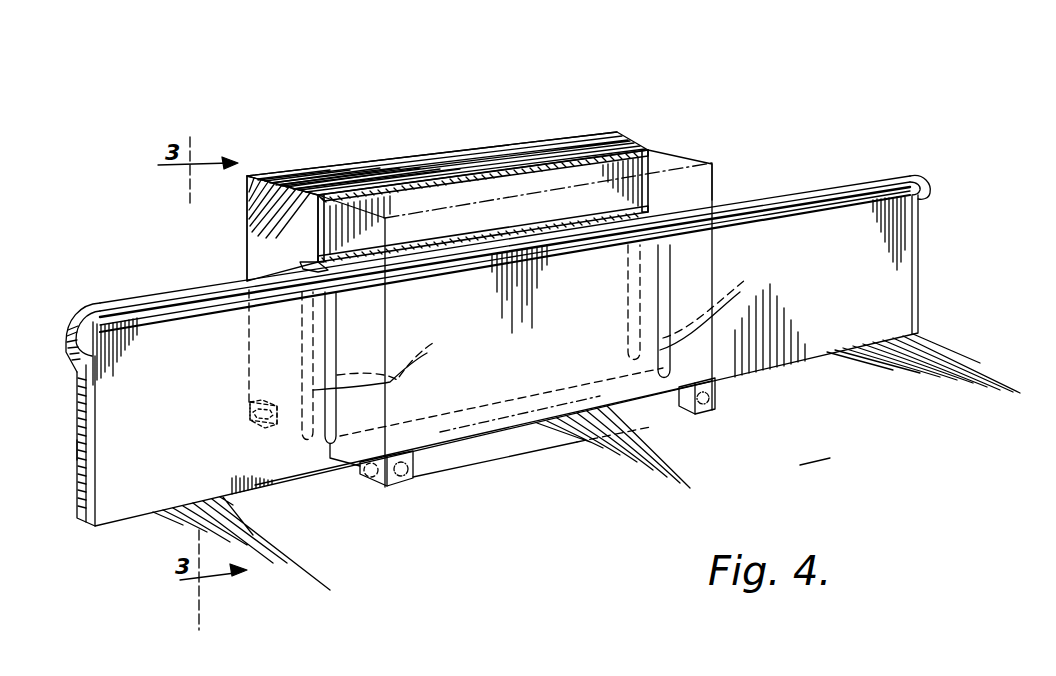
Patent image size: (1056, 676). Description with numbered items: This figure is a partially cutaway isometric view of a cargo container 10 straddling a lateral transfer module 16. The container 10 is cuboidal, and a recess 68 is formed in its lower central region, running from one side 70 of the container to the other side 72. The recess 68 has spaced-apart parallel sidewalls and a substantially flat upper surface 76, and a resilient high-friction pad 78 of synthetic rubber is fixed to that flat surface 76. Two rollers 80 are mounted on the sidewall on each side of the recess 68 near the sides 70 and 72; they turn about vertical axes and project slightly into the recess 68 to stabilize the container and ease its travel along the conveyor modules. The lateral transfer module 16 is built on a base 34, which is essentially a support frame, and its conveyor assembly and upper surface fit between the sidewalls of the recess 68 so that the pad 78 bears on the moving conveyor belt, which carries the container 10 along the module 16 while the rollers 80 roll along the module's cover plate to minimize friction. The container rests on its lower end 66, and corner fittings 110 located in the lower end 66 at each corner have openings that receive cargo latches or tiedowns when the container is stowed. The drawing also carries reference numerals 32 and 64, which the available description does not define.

The cargo container 10 is at (508, 106).
The lateral transfer module 16 is at (858, 312).
The lower surface of plate 32 is at (805, 468).
The base 34 is at (77, 449).
The housing 64 is at (618, 132).
The lower end 66 is at (290, 443).
The recess 68 is at (305, 357).
The side of the container 70 is at (292, 242).
The side of the container 72 is at (714, 178).
The flat upper surface 76 is at (703, 167).
The resilient high-friction pad 78 is at (305, 265).
The rollers 80 is at (437, 341).
The corner fittings 110 is at (420, 472).